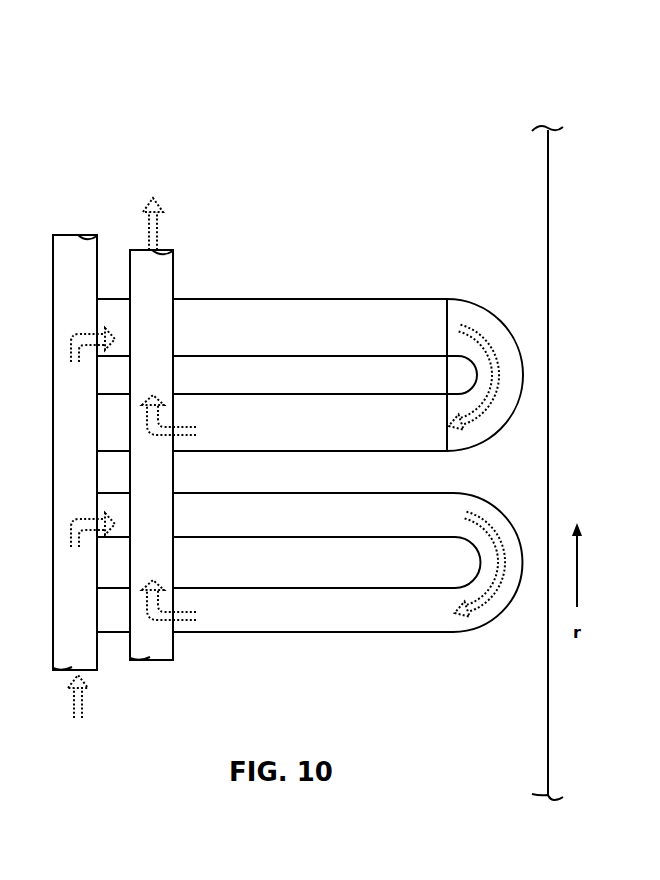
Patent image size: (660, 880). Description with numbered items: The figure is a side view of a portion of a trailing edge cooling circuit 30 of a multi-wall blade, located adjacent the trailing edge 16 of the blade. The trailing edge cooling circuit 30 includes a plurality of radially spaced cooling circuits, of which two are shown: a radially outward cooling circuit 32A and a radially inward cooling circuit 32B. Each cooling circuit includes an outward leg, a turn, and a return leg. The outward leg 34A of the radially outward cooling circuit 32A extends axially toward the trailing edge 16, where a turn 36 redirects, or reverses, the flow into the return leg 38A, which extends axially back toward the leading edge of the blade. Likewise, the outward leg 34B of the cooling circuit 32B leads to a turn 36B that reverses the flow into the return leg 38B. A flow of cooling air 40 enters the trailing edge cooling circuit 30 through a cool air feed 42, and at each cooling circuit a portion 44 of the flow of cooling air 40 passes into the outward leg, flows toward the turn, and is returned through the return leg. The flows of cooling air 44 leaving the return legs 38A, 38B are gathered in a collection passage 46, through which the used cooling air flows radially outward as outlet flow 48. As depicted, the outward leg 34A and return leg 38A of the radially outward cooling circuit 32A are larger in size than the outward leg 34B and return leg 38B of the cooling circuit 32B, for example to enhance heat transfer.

The trailing edge cooling circuit 30 is at (254, 157).
The trailing edge 16 is at (574, 734).
The radially outward cooling circuit 32A is at (424, 284).
The cooling circuit 32B is at (422, 654).
The outward leg 34A is at (258, 299).
The outward leg 34B is at (262, 538).
The turn 36 is at (514, 345).
The turn 36B is at (513, 528).
The return leg 38A is at (262, 451).
The return leg 38B is at (262, 632).
The flow of cooling air 40 is at (85, 700).
The cool air feed 42 is at (78, 234).
The portion of the flow of cooling air 44 is at (80, 333).
The collection passage 46 is at (175, 267).
The outlet flow 48 is at (157, 202).